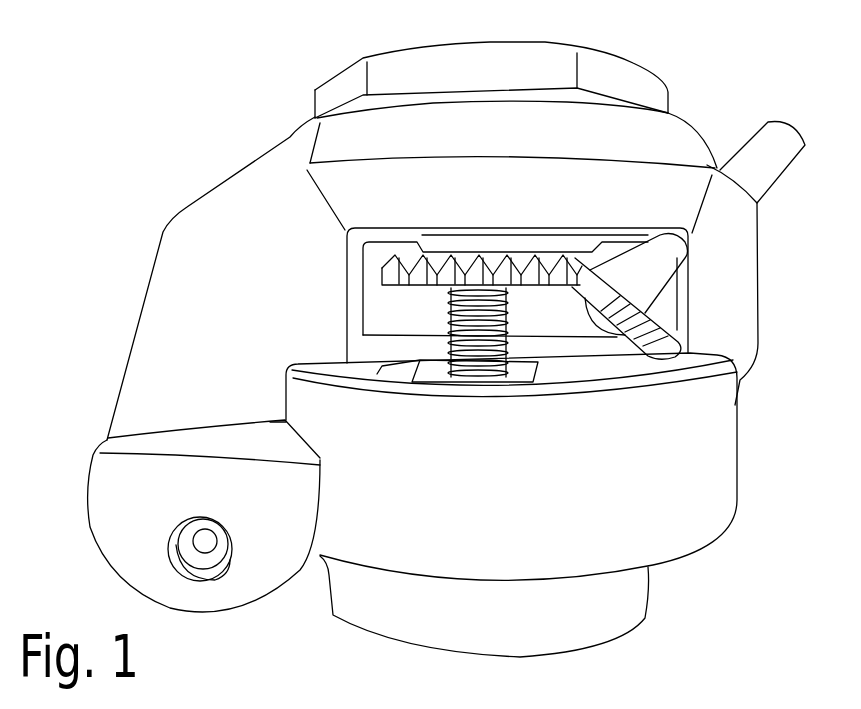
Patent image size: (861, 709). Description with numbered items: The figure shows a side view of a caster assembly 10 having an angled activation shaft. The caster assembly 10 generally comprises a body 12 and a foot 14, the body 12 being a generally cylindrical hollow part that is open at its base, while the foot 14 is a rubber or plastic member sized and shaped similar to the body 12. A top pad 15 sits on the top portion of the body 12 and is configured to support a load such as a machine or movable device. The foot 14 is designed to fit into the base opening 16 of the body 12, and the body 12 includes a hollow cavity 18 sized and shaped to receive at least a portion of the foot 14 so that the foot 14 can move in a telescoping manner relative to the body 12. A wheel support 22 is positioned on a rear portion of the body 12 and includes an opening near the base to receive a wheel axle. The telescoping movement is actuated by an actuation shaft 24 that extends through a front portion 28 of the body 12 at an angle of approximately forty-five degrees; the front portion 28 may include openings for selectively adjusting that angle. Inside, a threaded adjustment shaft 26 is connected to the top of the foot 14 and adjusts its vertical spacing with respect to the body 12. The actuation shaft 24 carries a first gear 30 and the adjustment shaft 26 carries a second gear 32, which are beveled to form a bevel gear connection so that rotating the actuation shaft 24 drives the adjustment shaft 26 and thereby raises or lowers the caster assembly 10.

The caster assembly 10 is at (279, 44).
The body 12 is at (710, 422).
The foot 14 is at (607, 617).
The top pad 15 is at (613, 75).
The base opening 16 is at (682, 559).
The hollow cavity 18 is at (160, 328).
The wheel support 22 is at (107, 495).
The actuation shaft 24 is at (783, 138).
The adjustment shaft 26 is at (700, 374).
The front portion 28 is at (745, 218).
The first gear 30 is at (617, 268).
The second gear 32 is at (620, 157).